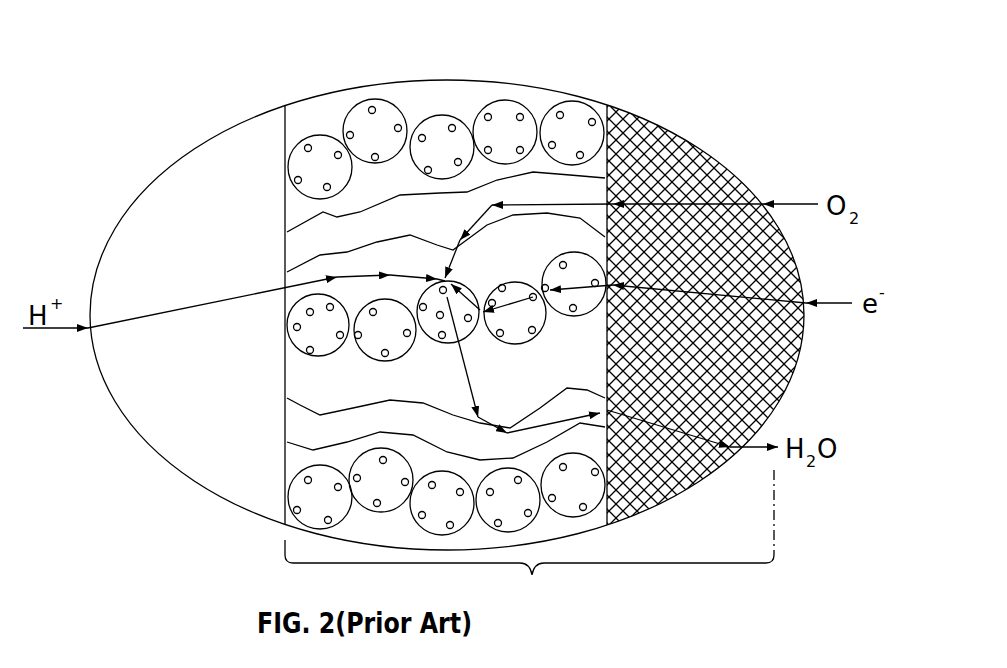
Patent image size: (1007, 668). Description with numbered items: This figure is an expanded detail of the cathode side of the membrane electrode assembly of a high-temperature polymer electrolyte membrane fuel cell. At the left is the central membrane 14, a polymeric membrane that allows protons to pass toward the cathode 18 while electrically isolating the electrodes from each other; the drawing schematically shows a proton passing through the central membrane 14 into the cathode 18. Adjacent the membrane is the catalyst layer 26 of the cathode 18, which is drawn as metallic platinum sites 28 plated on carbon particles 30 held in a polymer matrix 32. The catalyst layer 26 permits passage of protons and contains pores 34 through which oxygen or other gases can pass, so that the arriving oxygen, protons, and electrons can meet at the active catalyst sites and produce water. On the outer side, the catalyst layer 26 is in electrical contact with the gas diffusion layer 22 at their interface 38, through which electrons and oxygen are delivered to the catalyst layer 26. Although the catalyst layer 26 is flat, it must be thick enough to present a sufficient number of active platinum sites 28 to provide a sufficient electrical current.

The central membrane 14 is at (237, 122).
The cathode 18 is at (532, 575).
The gas diffusion layer 22 is at (685, 143).
The catalyst layer 26 is at (513, 82).
The platinum sites 28 is at (387, 357).
The carbon particles 30 is at (365, 352).
The polymer matrix 32 is at (327, 105).
The pores 34 is at (307, 243).
The interface 38 is at (628, 132).